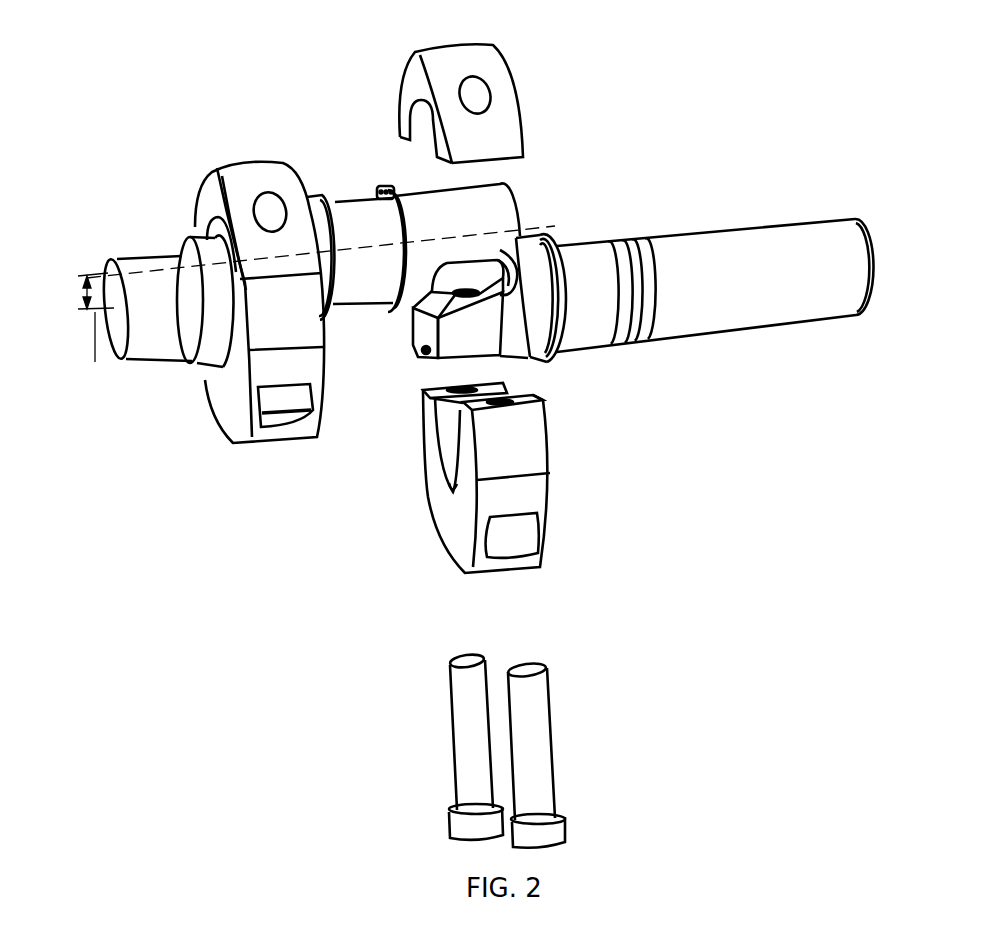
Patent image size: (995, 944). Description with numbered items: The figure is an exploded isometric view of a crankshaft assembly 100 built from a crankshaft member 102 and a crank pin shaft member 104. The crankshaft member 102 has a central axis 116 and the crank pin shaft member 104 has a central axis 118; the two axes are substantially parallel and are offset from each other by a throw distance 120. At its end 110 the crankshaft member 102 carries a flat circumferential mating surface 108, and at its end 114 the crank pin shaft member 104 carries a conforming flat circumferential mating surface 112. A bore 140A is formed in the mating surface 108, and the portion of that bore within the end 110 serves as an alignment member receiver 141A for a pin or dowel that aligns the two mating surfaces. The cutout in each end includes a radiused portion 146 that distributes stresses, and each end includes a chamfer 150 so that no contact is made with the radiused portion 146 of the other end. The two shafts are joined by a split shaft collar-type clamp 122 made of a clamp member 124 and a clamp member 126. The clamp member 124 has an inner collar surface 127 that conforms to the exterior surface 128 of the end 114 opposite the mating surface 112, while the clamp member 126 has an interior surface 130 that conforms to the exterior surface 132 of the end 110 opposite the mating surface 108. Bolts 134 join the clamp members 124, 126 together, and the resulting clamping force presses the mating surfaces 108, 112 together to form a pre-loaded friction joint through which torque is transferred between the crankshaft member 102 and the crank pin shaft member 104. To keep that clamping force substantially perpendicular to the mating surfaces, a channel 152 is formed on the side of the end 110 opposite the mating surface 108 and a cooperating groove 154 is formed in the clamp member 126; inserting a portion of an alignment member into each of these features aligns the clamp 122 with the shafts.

The crankshaft assembly 100 is at (698, 48).
The crankshaft member 102 is at (157, 350).
The crank pin shaft member 104 is at (503, 184).
The circumferential mating surface 108 is at (448, 288).
The end 110 is at (455, 353).
The circumferential mating surface 112 is at (480, 274).
The end 114 is at (500, 217).
The central axis 116 is at (98, 349).
The central axis 118 is at (368, 243).
The throw distance 120 is at (77, 291).
The clamp 122 is at (243, 172).
The clamp member 124 is at (482, 53).
The clamp member 126 is at (540, 508).
The inner collar surface 127 is at (420, 123).
The exterior surface 128 is at (433, 202).
The interior surface 130 is at (443, 432).
The exterior surface 132 is at (505, 350).
The bolts 134 is at (470, 777).
The bore 140A is at (467, 288).
The alignment member receiver 141A is at (431, 273).
The radiused portion 146 is at (503, 284).
The chamfer 150 is at (423, 310).
The channel 152 is at (418, 350).
The groove 154 is at (448, 485).